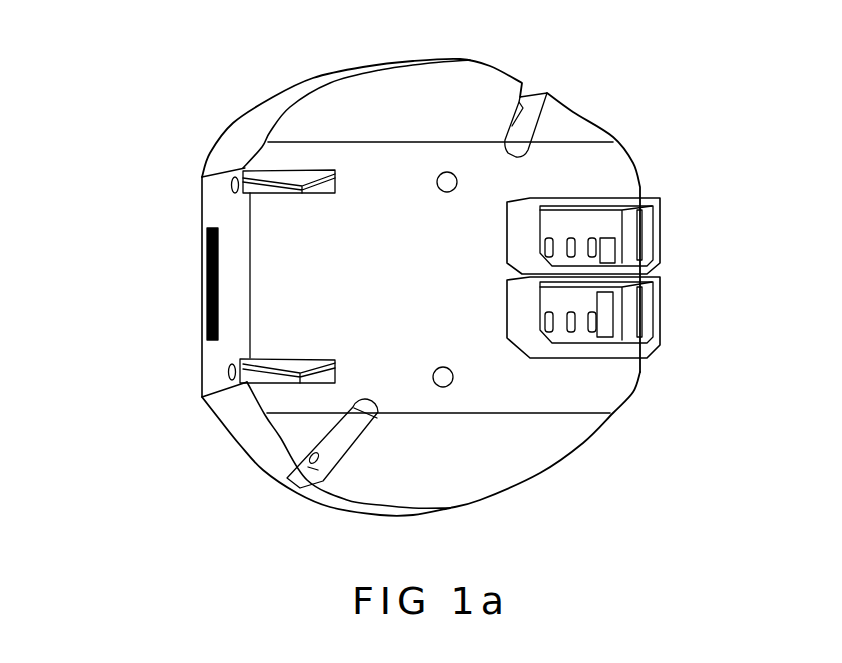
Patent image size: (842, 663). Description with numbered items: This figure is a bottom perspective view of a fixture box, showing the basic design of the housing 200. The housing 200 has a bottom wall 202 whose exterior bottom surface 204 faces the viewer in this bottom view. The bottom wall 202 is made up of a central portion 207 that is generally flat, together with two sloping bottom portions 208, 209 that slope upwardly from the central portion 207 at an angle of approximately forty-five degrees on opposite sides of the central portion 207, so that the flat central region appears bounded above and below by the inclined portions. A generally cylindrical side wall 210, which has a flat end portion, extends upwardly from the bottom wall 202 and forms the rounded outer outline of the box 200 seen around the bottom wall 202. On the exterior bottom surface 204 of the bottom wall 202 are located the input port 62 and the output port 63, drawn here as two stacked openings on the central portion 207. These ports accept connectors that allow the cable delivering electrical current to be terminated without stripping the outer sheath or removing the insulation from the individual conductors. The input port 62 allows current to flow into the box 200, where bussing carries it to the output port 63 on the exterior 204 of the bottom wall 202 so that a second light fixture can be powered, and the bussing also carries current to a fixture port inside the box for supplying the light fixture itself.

The housing 200 is at (613, 137).
The bottom wall 202 is at (293, 217).
The exterior bottom surface 204 is at (275, 313).
The central portion 207 is at (590, 388).
The sloping bottom portion 208 is at (457, 83).
The sloping bottom portion 209 is at (538, 448).
The side wall 210 is at (235, 418).
The input port 62 is at (610, 233).
The output port 63 is at (578, 307).